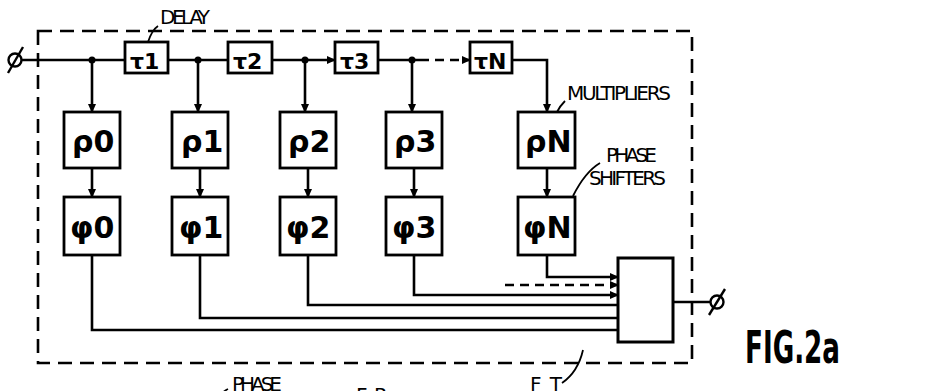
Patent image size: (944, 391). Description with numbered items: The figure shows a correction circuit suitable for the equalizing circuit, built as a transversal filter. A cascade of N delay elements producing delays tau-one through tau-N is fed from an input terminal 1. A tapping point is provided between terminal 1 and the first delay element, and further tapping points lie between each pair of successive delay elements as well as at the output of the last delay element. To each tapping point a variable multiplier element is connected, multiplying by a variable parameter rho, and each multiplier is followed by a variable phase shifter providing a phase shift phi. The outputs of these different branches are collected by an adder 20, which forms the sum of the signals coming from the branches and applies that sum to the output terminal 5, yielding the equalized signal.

The terminal 1 is at (12, 53).
The terminal 5 is at (714, 296).
The adder 20 is at (666, 258).